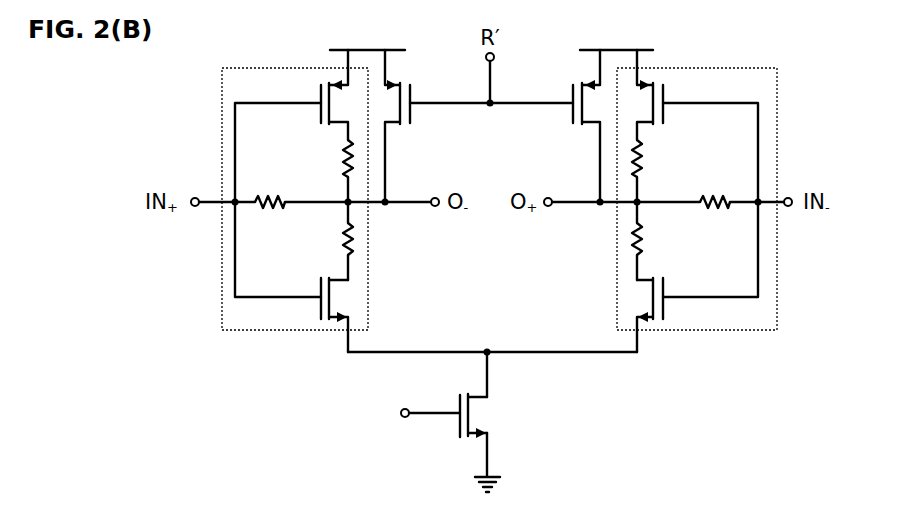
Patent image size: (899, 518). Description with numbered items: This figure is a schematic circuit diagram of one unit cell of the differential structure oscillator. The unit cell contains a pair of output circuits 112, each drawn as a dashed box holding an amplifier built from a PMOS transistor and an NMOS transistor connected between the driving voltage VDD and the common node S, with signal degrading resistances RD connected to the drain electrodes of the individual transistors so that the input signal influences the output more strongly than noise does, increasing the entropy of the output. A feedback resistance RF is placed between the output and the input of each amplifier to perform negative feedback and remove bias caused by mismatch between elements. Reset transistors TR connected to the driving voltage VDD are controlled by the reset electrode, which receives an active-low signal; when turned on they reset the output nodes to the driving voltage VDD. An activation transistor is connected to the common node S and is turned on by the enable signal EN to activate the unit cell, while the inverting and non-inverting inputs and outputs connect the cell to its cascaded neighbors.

The output circuit 112 is at (308, 331).
The signal degrading resistance RD is at (492, 207).
The feedback resistance RF is at (493, 188).
The reset transistor TR is at (492, 126).
The driving voltage VDD is at (491, 35).
The common node S is at (492, 359).
The enable signal EN is at (424, 416).